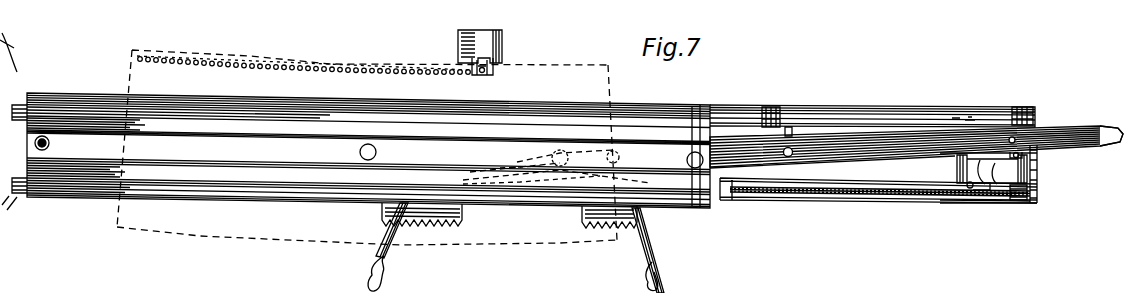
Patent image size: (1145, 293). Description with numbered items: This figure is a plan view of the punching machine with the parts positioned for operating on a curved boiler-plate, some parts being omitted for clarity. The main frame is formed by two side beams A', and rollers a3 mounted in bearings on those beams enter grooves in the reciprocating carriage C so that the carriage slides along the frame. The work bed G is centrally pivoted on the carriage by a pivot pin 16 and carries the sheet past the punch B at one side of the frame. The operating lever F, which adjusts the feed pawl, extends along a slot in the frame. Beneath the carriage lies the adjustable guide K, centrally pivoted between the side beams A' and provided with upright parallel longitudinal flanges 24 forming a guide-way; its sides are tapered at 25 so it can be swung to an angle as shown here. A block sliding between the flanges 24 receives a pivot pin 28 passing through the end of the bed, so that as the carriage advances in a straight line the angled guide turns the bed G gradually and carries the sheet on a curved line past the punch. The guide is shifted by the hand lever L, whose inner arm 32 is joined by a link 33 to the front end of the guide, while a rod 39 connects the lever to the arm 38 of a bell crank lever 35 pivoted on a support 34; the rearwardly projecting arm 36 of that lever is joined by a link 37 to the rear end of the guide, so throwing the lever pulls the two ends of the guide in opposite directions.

The work bed G is at (361, 150).
The punch B is at (505, 50).
The reciprocating carriage C is at (636, 107).
The pivot pin 16 is at (376, 150).
The pivot pin 28 is at (687, 161).
The arm 32 is at (583, 175).
The link 33 is at (556, 175).
The operating lever F is at (391, 259).
The hand lever L is at (650, 250).
The side beams A' is at (873, 154).
The rod 39 is at (925, 183).
The upright parallel longitudinal flanges 24 is at (895, 145).
The tapered sides of the guide 25 is at (872, 160).
The adjustable guide K is at (1088, 118).
The support 34 is at (953, 177).
The link 37 is at (1037, 158).
The arm of bell crank lever 38 is at (983, 190).
The bell crank lever 35 is at (987, 163).
The rearwardly projecting arm 36 is at (1013, 203).
The rollers a3 is at (1040, 200).